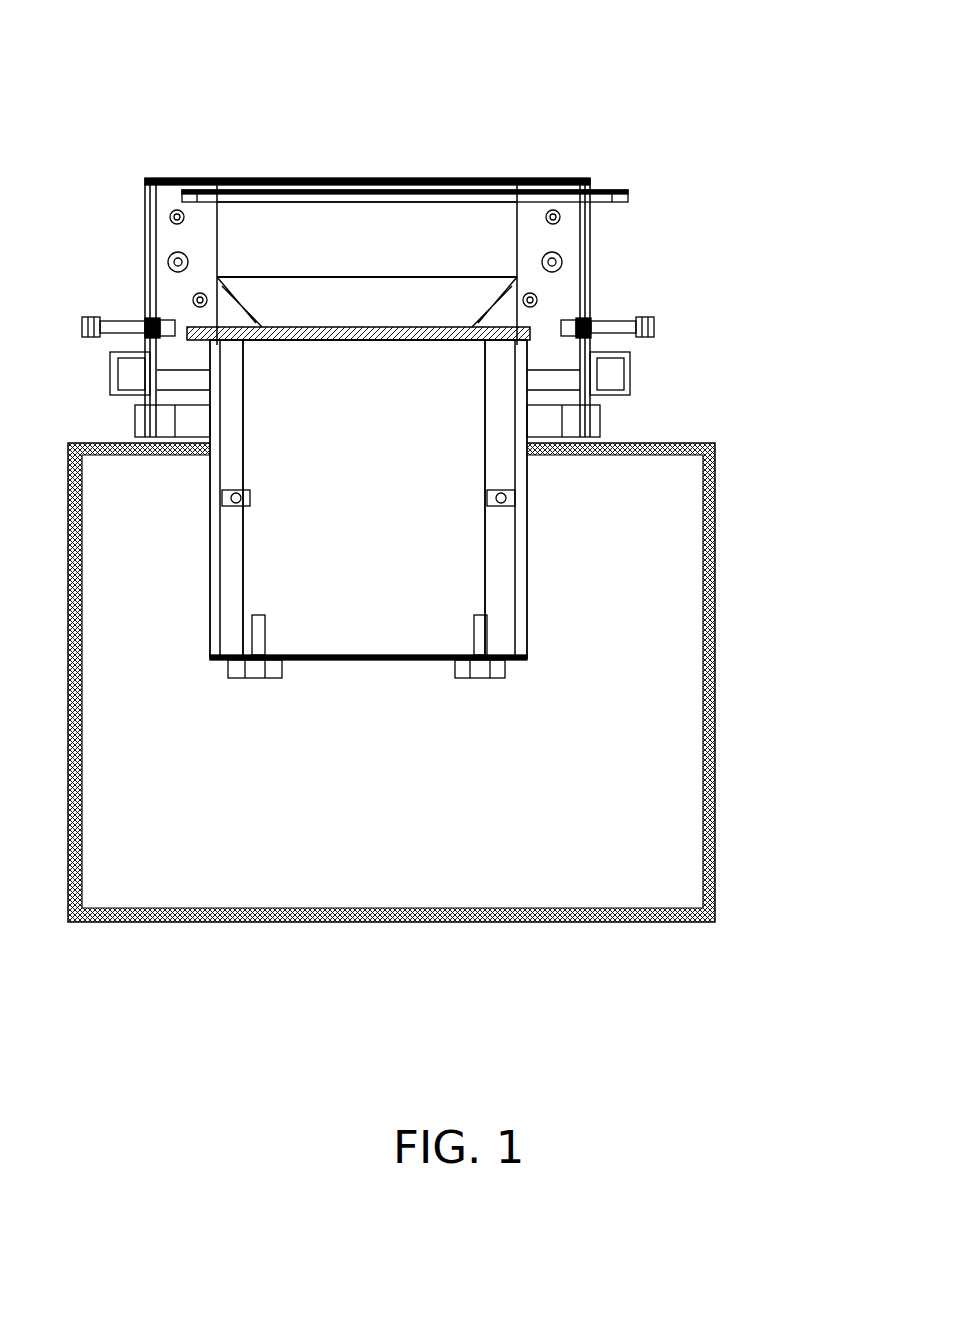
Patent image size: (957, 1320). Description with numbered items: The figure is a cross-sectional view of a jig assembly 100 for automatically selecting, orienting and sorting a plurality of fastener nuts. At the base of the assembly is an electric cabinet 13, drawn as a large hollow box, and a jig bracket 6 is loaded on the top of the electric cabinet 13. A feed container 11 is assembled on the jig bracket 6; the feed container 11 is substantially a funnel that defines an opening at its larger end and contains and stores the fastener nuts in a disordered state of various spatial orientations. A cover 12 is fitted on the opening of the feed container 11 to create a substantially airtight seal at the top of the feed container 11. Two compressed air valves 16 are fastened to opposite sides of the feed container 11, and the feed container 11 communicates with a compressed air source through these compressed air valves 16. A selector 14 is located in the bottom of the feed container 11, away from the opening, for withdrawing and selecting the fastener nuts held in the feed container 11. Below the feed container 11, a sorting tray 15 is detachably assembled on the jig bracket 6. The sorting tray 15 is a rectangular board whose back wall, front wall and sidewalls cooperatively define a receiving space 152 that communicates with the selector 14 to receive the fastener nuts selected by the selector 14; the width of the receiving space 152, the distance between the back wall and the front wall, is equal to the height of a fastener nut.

The jig assembly 100 is at (450, 41).
The jig bracket 6 is at (143, 222).
The feed container 11 is at (400, 258).
The cover 12 is at (632, 190).
The electric cabinet 13 is at (718, 800).
The selector 14 is at (480, 326).
The sorting tray 15 is at (505, 562).
The receiving space 152 is at (445, 484).
The compressed air valves 16 is at (650, 336).